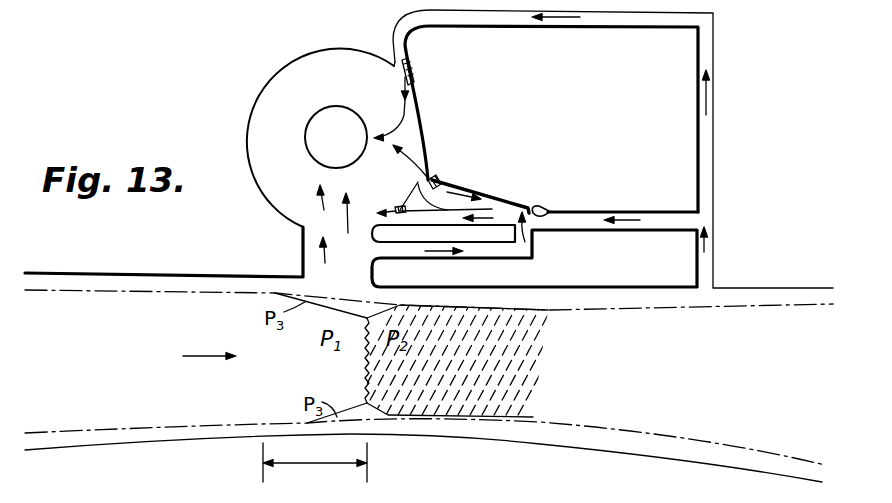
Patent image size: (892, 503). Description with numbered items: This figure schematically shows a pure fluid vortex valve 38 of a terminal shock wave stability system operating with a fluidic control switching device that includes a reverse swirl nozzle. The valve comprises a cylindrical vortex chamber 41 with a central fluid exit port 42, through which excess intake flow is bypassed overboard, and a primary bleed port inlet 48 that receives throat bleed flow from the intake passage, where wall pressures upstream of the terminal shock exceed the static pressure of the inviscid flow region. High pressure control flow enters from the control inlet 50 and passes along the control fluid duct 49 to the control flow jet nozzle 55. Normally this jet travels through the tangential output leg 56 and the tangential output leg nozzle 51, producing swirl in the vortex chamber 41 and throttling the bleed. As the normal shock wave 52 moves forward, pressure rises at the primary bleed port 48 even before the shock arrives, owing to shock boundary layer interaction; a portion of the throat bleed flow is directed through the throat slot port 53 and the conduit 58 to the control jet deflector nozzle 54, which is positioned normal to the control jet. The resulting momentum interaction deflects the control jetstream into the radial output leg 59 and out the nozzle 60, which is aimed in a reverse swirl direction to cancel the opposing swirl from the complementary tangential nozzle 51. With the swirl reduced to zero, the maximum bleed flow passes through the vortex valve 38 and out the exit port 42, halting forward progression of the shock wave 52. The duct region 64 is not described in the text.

The pure fluid vortex valve 38 is at (445, 100).
The cylindrical vortex chamber 41 is at (272, 126).
The central fluid exit port 42 is at (350, 150).
The primary bleed port inlet 48 is at (310, 250).
The control fluid duct 49 is at (670, 222).
The control inlet 50 is at (707, 275).
The tangential output leg nozzle 51 is at (396, 62).
The normal shock wave 52 is at (380, 370).
The throat slot port 53 is at (373, 247).
The control jet deflector nozzle 54 is at (536, 246).
The control flow jet nozzle 55 is at (543, 208).
The tangential output leg 56 is at (455, 205).
The conduit 58 is at (470, 250).
The radial output leg 59 is at (488, 203).
The reverse swirl nozzle 60 is at (440, 174).
The main duct 64 is at (160, 283).